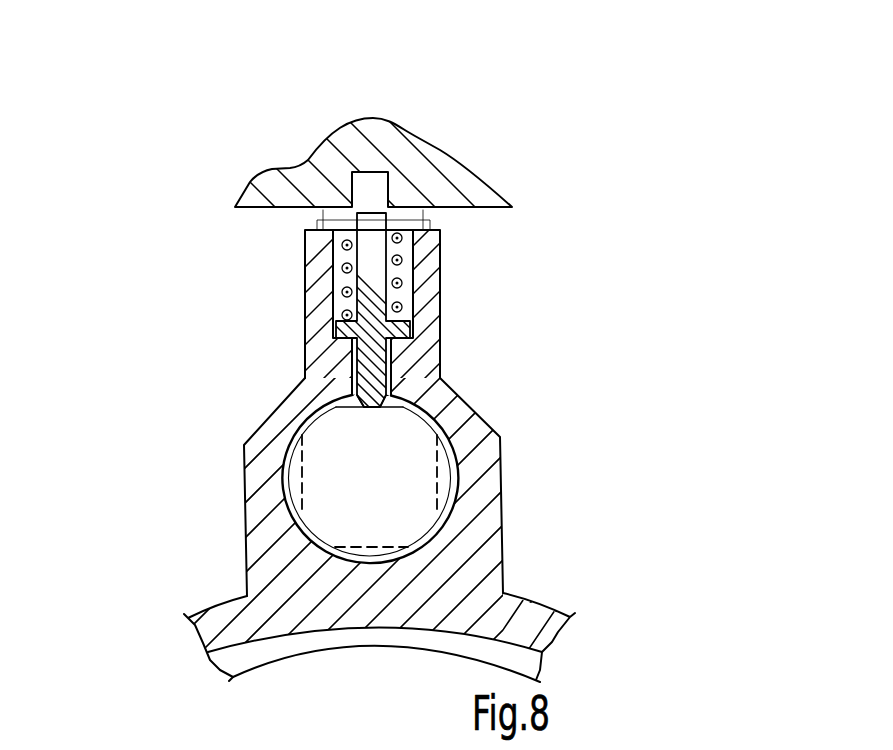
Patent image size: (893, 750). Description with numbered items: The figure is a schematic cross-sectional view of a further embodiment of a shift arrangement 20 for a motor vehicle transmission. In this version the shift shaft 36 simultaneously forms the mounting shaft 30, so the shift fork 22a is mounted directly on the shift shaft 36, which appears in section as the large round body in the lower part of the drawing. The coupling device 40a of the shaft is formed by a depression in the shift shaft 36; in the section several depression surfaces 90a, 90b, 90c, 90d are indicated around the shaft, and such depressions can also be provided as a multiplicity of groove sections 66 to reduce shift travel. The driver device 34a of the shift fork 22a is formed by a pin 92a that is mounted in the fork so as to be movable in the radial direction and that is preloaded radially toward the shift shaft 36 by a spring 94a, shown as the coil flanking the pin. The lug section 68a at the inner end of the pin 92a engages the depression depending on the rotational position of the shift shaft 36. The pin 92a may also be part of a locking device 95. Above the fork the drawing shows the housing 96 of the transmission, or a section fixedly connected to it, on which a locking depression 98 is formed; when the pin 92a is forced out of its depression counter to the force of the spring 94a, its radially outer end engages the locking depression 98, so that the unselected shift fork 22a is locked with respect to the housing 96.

The shift arrangement 20 is at (622, 184).
The shift fork 22a is at (475, 562).
The mounting shaft 30 is at (219, 358).
The shift shaft 36 is at (373, 398).
The driver device 34a is at (353, 347).
The pin 92a is at (257, 273).
The coupling device 40a is at (527, 354).
The groove section 66 is at (405, 392).
The lug section 68a is at (337, 458).
The depression 90a is at (527, 354).
The depression 90b is at (441, 472).
The depression 90c is at (356, 553).
The depression 90d is at (298, 473).
The spring 94a is at (400, 282).
The locking device 95 is at (318, 178).
The housing 96 is at (467, 177).
The locking depression 98 is at (370, 188).